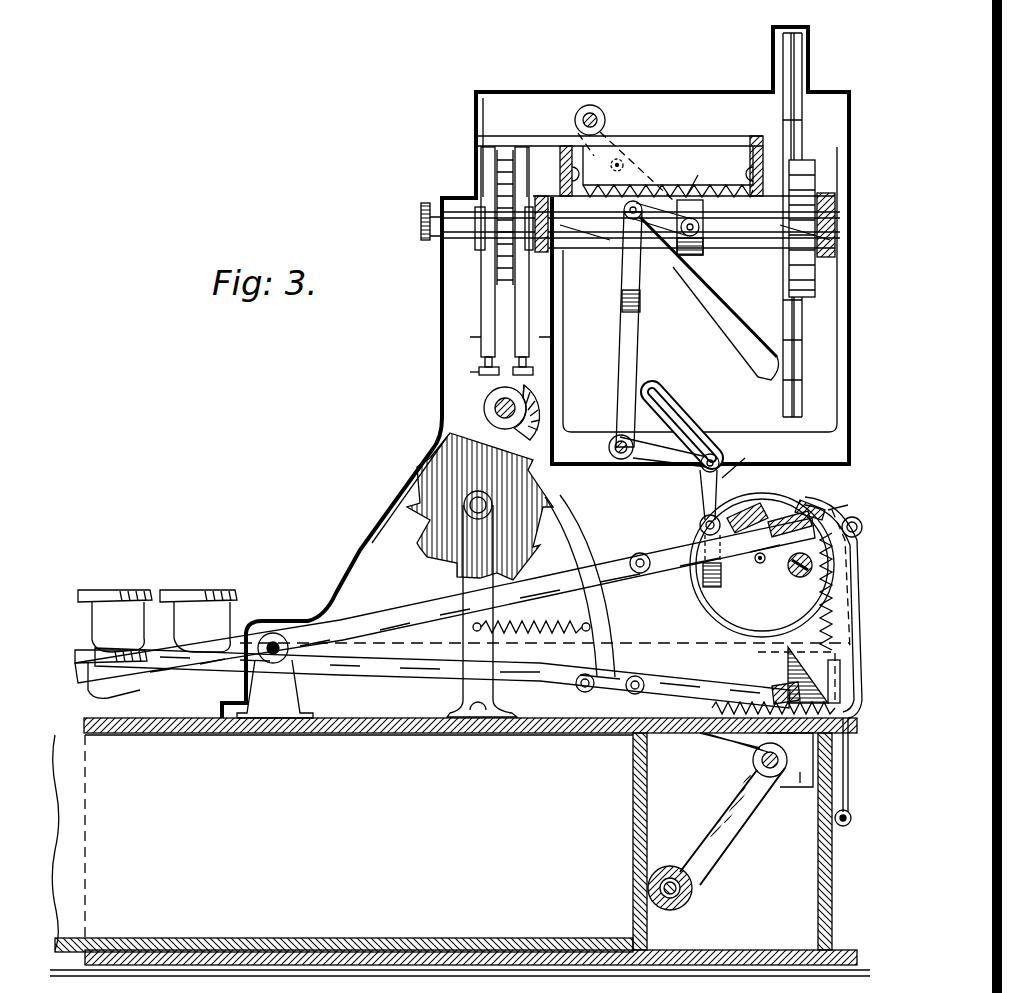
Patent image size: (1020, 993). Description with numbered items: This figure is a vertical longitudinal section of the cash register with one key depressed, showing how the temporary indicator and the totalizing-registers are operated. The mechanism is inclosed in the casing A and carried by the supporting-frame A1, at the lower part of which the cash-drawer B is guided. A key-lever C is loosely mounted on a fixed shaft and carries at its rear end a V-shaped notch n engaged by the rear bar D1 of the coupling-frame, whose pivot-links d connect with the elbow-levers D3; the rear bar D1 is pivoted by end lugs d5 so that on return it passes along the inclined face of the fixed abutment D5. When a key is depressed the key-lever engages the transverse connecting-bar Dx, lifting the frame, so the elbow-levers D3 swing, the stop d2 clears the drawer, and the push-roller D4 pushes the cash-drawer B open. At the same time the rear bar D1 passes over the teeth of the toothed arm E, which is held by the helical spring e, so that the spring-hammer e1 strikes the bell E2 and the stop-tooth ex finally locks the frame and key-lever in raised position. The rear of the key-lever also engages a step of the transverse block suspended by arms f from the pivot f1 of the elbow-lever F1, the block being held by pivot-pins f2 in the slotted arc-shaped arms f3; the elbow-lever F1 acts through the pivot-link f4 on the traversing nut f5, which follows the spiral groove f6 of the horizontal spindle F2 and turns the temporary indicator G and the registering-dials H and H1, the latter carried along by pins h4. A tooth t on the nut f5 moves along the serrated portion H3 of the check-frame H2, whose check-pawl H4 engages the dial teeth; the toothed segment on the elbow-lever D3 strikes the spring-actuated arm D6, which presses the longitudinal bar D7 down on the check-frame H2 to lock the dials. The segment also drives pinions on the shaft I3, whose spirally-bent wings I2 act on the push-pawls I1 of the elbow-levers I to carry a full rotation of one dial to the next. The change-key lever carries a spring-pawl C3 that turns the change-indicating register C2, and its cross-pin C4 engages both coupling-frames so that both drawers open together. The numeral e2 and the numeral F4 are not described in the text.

The casing A is at (645, 245).
The supporting-frame A1 is at (460, 561).
The cash-drawer B is at (342, 843).
The key-lever C is at (438, 604).
The change-indicating register C2 is at (480, 506).
The spring-pawl C3 is at (565, 522).
The cross-pin C4 is at (610, 695).
The rear bar of coupling-frame D1 is at (805, 512).
The elbow-lever D3 is at (746, 809).
The push-roller D4 is at (678, 896).
The fixed abutment / toothed segment D5 is at (799, 665).
The spring-actuated arm D6 is at (709, 298).
The longitudinal bar D7 is at (598, 118).
The transverse connecting-bar Dx is at (747, 507).
The pivot-link d is at (628, 630).
The projecting stop d2 is at (790, 786).
The end lug d5 is at (792, 572).
The toothed arm E is at (833, 607).
The bell E2 is at (762, 565).
The helical spring e is at (773, 696).
The spring-hammer e1 is at (854, 521).
The pin e2 is at (852, 728).
The stop-tooth ex is at (845, 501).
The elbow-lever F1 is at (690, 590).
The horizontal spindle F2 is at (684, 225).
The lever F4 is at (630, 340).
The suspension arm f is at (736, 459).
The pivot f1 is at (710, 453).
The pivot-pin f2 is at (699, 526).
The slotted arc-shaped arm f3 is at (672, 418).
The pivot-link f4 is at (683, 236).
The traversing nut f5 is at (697, 233).
The spiral groove f6 is at (695, 248).
The temporary indicator G is at (787, 225).
The permanent totalizing-register dial H is at (529, 300).
The temporary totalizing-register dial H1 is at (481, 300).
The check-frame H2 is at (619, 156).
The serrated middle portion H3 is at (662, 171).
The check-pawl H4 is at (512, 152).
The pins h4 is at (630, 227).
The elbow-lever I is at (501, 338).
The push-pawl I1 is at (494, 378).
The spirally-bent wing I2 is at (530, 419).
The shaft I3 is at (484, 408).
The V-shaped notch n is at (786, 518).
The tooth t is at (695, 178).